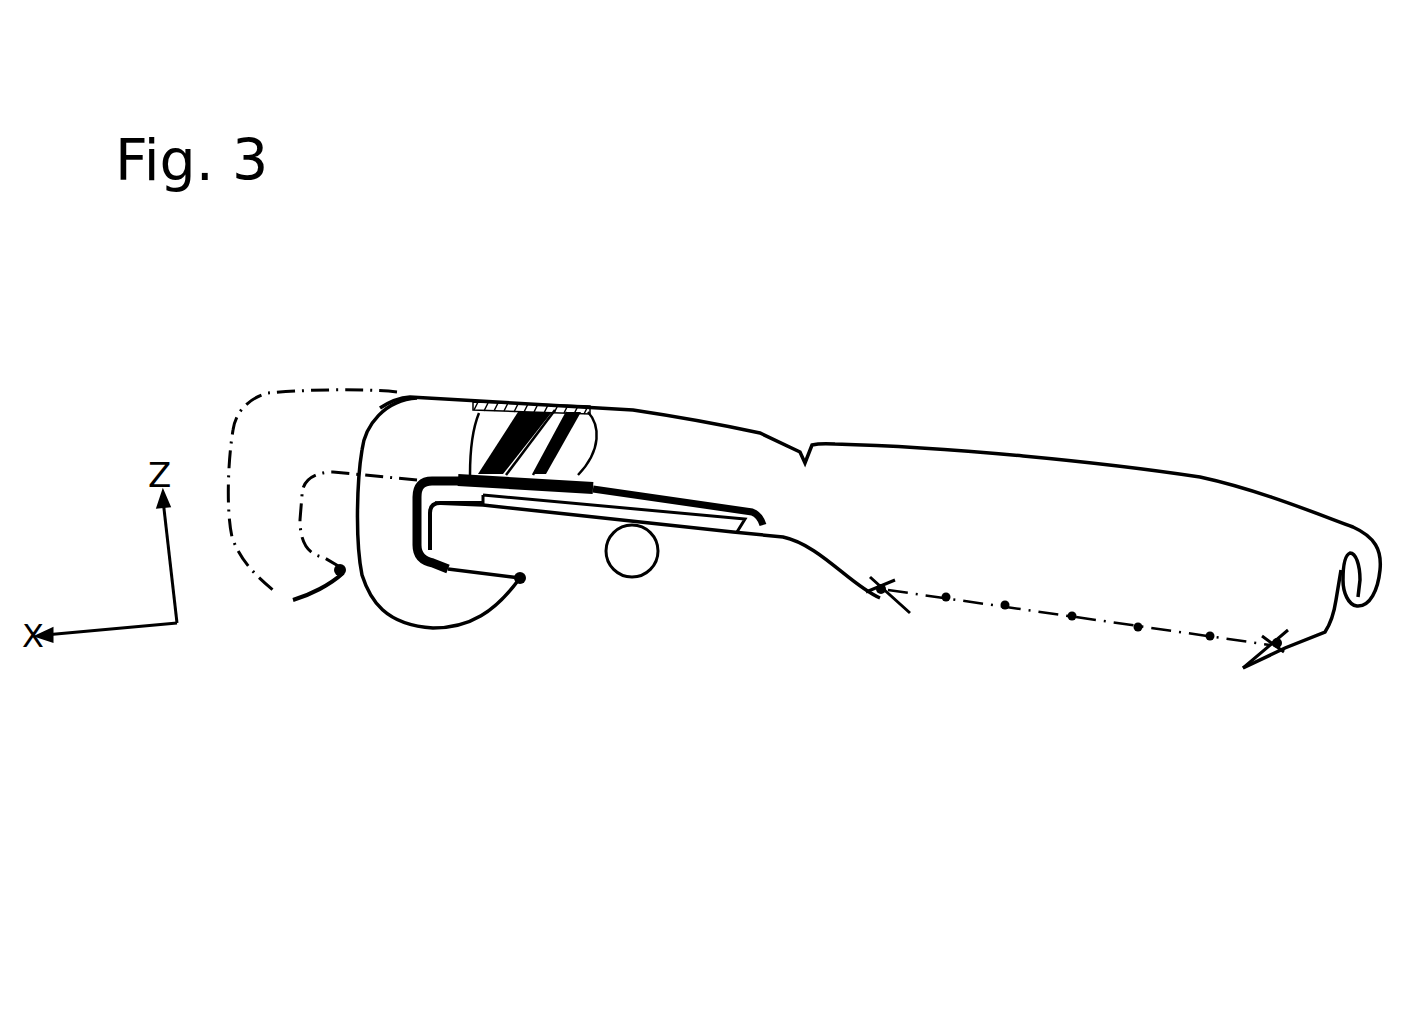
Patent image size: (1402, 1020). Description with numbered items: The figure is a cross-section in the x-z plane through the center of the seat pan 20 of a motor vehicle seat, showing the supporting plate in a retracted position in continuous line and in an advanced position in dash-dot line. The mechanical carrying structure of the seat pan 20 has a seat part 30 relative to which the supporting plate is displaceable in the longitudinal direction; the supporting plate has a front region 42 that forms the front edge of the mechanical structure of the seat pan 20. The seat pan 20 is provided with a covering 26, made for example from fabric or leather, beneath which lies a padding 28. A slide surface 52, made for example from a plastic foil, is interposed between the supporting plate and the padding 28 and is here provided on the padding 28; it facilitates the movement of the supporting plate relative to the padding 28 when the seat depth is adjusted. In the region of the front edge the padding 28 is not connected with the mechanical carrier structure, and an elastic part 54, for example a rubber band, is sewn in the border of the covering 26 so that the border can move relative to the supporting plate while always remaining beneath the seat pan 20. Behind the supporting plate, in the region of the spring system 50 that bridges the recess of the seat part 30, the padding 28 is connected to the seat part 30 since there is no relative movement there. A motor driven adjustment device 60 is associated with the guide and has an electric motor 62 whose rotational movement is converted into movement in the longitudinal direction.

The seat pan 20 is at (1097, 408).
The covering 26 is at (493, 403).
The padding 28 is at (560, 407).
The seat part 30 is at (880, 602).
The front region 42 is at (417, 480).
The spring system 50 is at (1072, 617).
The slide surface 52 is at (613, 480).
The elastic part 54 is at (347, 587).
The motor driven adjustment device 60 is at (708, 518).
The electric motor 62 is at (635, 540).